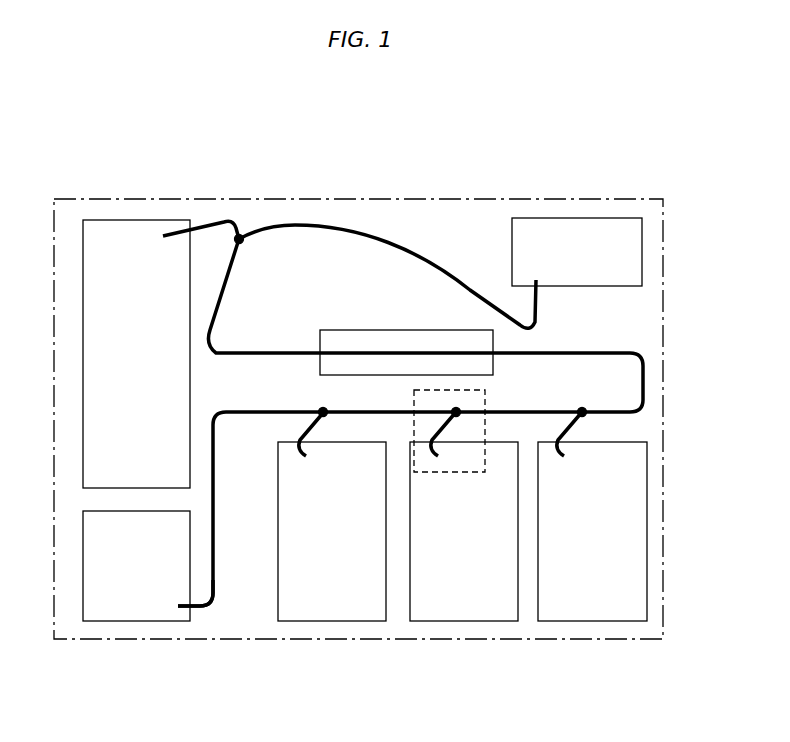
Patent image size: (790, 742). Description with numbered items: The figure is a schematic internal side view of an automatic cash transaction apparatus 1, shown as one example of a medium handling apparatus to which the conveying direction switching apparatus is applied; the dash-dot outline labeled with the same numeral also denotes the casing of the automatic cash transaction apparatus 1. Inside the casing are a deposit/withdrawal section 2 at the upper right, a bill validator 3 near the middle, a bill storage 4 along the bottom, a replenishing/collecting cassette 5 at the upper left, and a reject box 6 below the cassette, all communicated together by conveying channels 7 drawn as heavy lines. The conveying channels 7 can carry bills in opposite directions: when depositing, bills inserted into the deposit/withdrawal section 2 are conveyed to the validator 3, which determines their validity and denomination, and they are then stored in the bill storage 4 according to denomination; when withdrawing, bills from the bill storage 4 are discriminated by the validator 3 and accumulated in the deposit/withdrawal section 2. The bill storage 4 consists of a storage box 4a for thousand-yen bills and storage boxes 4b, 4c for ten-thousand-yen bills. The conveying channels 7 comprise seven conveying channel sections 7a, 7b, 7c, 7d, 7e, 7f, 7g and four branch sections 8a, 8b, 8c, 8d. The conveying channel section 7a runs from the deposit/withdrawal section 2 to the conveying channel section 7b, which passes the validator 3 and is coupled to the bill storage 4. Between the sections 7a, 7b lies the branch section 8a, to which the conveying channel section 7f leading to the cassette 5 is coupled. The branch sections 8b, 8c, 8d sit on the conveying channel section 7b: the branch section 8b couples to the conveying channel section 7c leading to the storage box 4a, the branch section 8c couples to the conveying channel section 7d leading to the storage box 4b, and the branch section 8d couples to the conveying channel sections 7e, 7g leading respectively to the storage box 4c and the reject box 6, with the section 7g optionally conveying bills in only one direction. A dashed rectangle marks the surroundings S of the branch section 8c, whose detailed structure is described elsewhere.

The automatic cash transaction apparatus 1 is at (664, 248).
The deposit/withdrawal section 2 is at (540, 217).
The bill validator 3 is at (369, 329).
The bill storage 4 is at (442, 562).
The storage box 4a is at (590, 623).
The storage box 4b is at (450, 623).
The storage box 4c is at (318, 623).
The replenishing/collecting cassette 5 is at (115, 219).
The reject box 6 is at (104, 623).
The conveying channels 7 is at (435, 418).
The conveying channel section 7a is at (341, 226).
The conveying channel section 7b is at (645, 383).
The conveying channel section 7c is at (563, 458).
The conveying channel section 7d is at (438, 458).
The conveying channel section 7e is at (303, 458).
The conveying channel section 7f is at (172, 234).
The conveying channel section 7g is at (205, 609).
The branch section 8a is at (242, 243).
The branch section 8b is at (584, 417).
The branch section 8c is at (458, 417).
The branch section 8d is at (325, 417).
The surroundings S is at (485, 462).